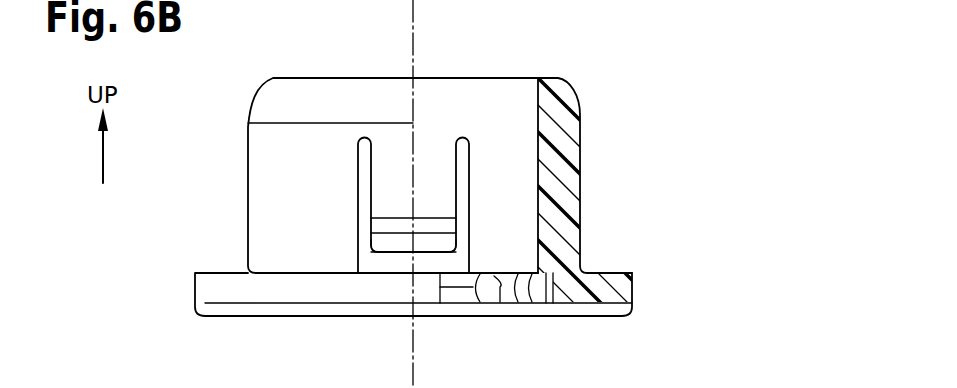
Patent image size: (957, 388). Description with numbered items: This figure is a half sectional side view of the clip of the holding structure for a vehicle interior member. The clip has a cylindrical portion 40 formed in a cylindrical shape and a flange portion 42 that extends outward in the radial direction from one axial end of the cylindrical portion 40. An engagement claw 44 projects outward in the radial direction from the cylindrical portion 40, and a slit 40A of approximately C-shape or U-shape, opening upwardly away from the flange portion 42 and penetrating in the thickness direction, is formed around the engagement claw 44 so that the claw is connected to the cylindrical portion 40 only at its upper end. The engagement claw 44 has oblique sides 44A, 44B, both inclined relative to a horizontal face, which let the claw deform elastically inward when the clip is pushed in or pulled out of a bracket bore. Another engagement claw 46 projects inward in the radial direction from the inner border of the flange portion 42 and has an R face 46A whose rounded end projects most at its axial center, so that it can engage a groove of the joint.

The cylindrical portion 40 is at (568, 150).
The slit 40A is at (442, 250).
The flange portion 42 is at (620, 287).
The engagement claw 44 is at (373, 206).
The oblique side 44A is at (384, 194).
The oblique side 44B is at (385, 244).
The engagement claw 46 is at (496, 290).
The R face 46A is at (500, 296).